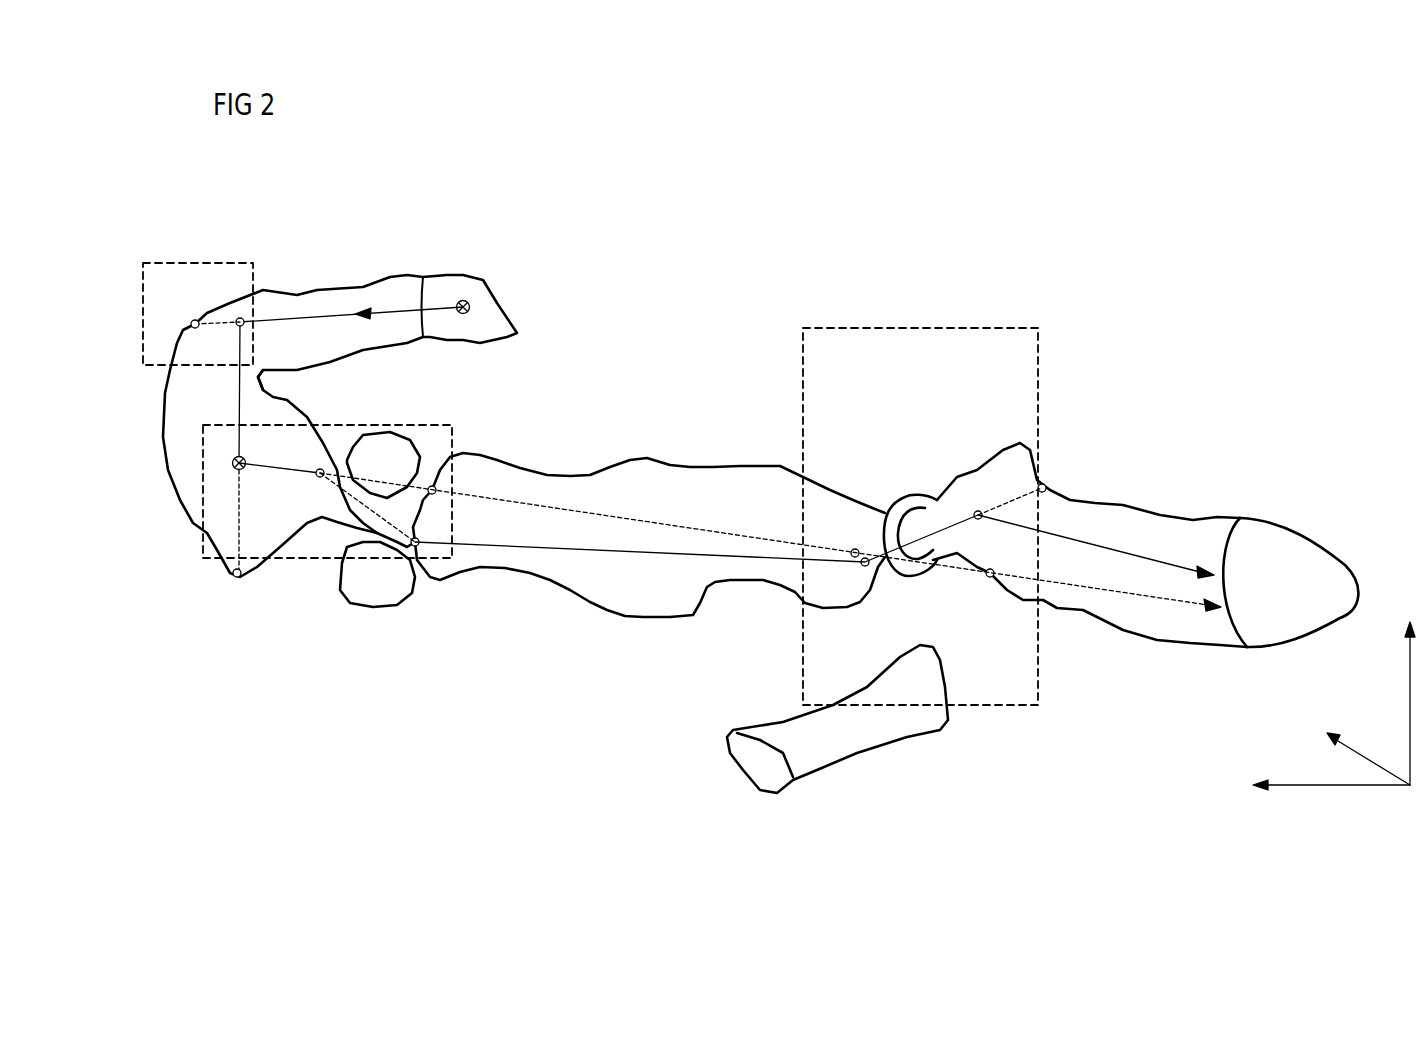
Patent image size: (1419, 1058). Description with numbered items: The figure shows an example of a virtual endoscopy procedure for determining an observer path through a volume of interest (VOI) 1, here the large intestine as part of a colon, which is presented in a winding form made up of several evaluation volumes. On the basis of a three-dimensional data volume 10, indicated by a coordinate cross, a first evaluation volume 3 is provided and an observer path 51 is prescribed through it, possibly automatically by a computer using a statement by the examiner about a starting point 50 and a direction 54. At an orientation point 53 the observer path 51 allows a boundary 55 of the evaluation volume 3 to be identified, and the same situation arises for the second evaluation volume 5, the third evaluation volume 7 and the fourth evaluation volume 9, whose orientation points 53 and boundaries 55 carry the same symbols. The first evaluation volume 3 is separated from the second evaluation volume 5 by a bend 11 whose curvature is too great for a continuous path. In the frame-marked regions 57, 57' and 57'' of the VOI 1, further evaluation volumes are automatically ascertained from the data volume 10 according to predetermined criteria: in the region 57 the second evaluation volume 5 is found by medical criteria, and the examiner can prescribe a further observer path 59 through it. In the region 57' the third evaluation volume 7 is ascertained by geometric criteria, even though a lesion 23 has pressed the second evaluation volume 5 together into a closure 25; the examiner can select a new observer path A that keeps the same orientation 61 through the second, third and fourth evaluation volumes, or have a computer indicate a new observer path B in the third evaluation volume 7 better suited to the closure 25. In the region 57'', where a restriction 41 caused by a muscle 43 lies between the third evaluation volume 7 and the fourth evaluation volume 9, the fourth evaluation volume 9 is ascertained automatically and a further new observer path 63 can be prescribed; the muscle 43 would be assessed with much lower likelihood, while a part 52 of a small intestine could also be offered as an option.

The volume of interest (VOI) 1 is at (650, 310).
The first evaluation volume 3 is at (353, 288).
The second evaluation volume 5 is at (188, 520).
The third evaluation volume 7 is at (670, 458).
The fourth evaluation volume 9 is at (1118, 503).
The 3D data volume 10 is at (1370, 720).
The bend 11 is at (273, 380).
The lesion 23 is at (398, 430).
The closure 25 is at (363, 530).
The restriction 41 is at (907, 530).
The muscle 43 is at (906, 496).
The starting point 50 is at (466, 300).
The observer path 51 is at (313, 313).
The part of a small intestine 52 is at (937, 683).
The orientation point 53 is at (238, 319).
The direction 54 is at (372, 307).
The boundary 55 is at (192, 322).
The region 57 is at (198, 271).
The region 57' is at (365, 475).
The region 57'' is at (891, 508).
The further observer path 59 is at (238, 397).
The orientation 61 is at (1213, 613).
The further new observer path 63 is at (1090, 547).
The new observer path A is at (553, 507).
The new observer path B is at (558, 550).